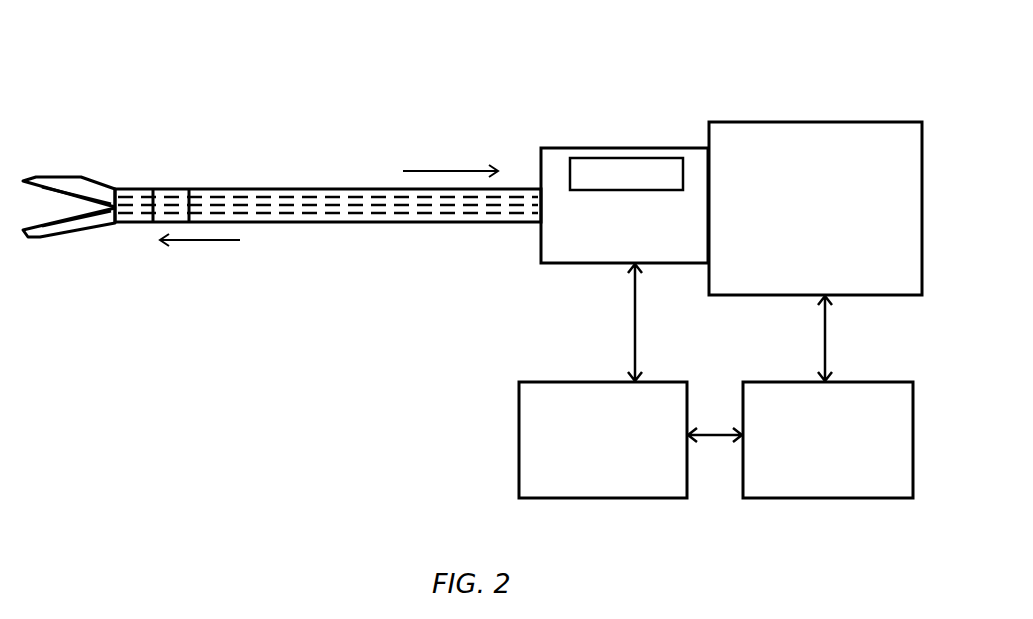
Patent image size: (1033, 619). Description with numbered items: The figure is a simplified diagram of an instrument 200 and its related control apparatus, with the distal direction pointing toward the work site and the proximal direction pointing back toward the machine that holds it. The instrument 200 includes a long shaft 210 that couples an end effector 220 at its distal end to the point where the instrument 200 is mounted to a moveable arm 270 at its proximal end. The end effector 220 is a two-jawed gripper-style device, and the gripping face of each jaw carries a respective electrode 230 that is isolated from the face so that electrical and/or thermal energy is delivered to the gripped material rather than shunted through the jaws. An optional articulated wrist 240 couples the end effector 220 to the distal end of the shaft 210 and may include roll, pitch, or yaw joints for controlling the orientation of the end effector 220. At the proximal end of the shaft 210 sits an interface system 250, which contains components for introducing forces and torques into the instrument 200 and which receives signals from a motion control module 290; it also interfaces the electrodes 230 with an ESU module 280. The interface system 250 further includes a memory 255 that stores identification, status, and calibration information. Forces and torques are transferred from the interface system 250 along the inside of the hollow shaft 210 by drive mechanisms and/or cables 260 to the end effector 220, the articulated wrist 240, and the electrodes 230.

The instrument 200 is at (28, 100).
The shaft 210 is at (321, 223).
The end effector 220 is at (66, 177).
The electrode 230 is at (64, 223).
The articulated wrist 240 is at (195, 180).
The interface system 250 is at (577, 264).
The memory 255 is at (603, 158).
The drive mechanisms and/or cables 260 is at (240, 205).
The moveable arm 270 is at (815, 208).
The ESU module 280 is at (603, 440).
The motion control module 290 is at (828, 440).